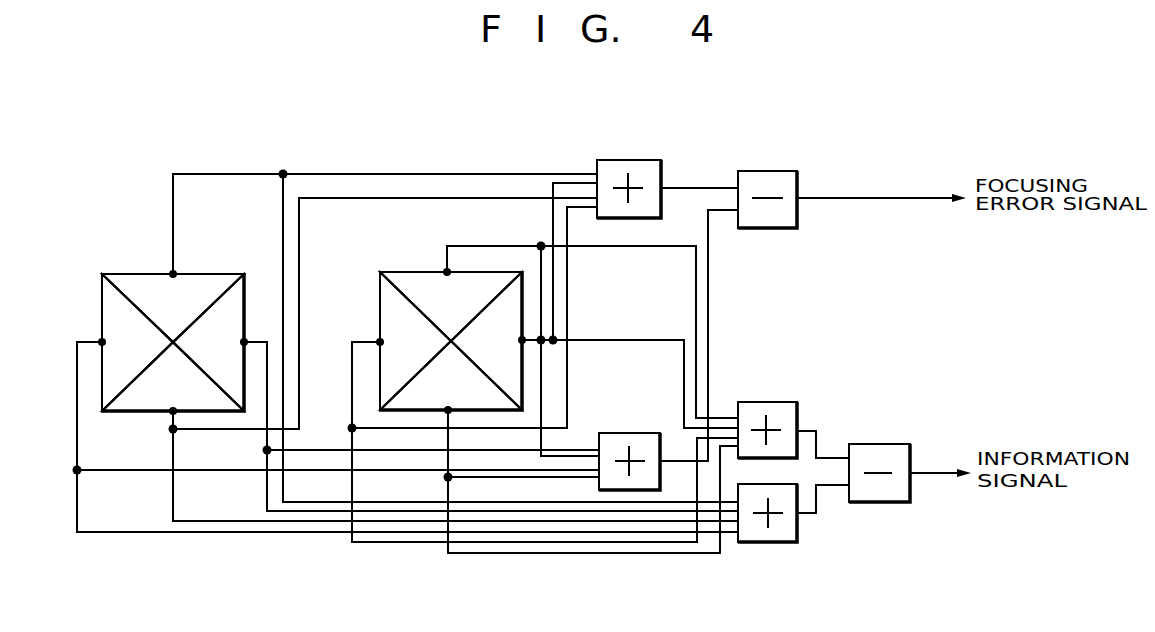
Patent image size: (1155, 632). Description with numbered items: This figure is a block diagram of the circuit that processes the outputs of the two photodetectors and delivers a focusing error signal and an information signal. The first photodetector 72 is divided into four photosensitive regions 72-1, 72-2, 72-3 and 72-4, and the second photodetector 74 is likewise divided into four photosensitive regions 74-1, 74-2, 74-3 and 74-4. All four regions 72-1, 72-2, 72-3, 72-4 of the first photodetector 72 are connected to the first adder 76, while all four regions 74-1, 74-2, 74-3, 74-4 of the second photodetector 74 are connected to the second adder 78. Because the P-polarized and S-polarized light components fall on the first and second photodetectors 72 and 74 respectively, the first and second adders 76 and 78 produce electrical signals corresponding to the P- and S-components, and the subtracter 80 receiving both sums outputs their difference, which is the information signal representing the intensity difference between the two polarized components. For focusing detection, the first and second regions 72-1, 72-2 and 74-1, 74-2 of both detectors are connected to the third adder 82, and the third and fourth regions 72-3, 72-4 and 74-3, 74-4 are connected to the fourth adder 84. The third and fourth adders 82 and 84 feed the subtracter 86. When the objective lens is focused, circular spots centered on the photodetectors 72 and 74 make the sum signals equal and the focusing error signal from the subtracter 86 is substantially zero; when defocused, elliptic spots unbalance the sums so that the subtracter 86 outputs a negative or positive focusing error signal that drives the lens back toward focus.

The first photodetector 72 is at (122, 263).
The first photosensitive region of first photodetector 72-1 is at (190, 287).
The second photosensitive region of first photodetector 72-2 is at (138, 402).
The third photosensitive region of first photodetector 72-3 is at (242, 303).
The fourth photosensitive region of first photodetector 72-4 is at (105, 302).
The second photodetector 74 is at (389, 266).
The first photosensitive region of second photodetector 74-1 is at (435, 287).
The second photosensitive region of second photodetector 74-2 is at (410, 398).
The third photosensitive region of second photodetector 74-3 is at (510, 362).
The fourth photosensitive region of second photodetector 74-4 is at (395, 333).
The first adder 76 is at (797, 528).
The second adder 78 is at (764, 408).
The subtracter 80 is at (883, 450).
The third adder 82 is at (627, 166).
The fourth adder 84 is at (634, 440).
The subtracter 86 is at (774, 176).